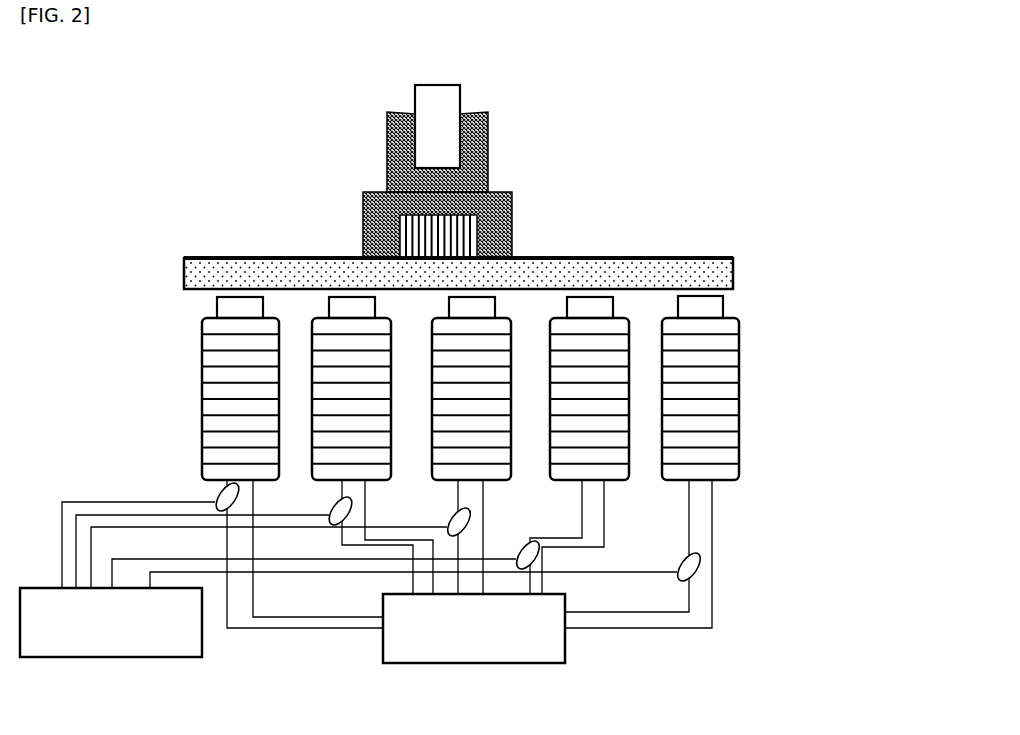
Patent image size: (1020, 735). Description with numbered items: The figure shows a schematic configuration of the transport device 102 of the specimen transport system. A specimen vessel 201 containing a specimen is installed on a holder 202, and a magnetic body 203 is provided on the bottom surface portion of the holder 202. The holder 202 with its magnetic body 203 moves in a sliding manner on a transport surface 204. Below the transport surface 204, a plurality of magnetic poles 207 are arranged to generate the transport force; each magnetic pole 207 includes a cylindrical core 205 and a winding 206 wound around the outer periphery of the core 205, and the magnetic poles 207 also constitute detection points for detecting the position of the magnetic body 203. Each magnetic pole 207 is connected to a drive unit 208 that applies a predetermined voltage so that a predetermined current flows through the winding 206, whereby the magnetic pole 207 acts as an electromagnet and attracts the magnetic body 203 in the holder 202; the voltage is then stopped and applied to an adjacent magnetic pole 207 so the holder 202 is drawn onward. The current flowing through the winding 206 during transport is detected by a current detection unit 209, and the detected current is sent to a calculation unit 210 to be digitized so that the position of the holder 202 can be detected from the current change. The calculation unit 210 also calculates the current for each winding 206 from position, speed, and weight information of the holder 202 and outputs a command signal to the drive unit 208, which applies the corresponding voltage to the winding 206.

The transport device 102 is at (708, 75).
The specimen vessel 201 is at (460, 98).
The holder 202 is at (488, 150).
The magnetic body 203 is at (512, 200).
The transport surface 204 is at (738, 258).
The core 205 is at (703, 307).
The winding 206 is at (740, 399).
The magnetic pole 207 is at (783, 387).
The drive unit 208 is at (547, 650).
The current detection unit 209 is at (700, 566).
The calculation unit 210 is at (140, 652).